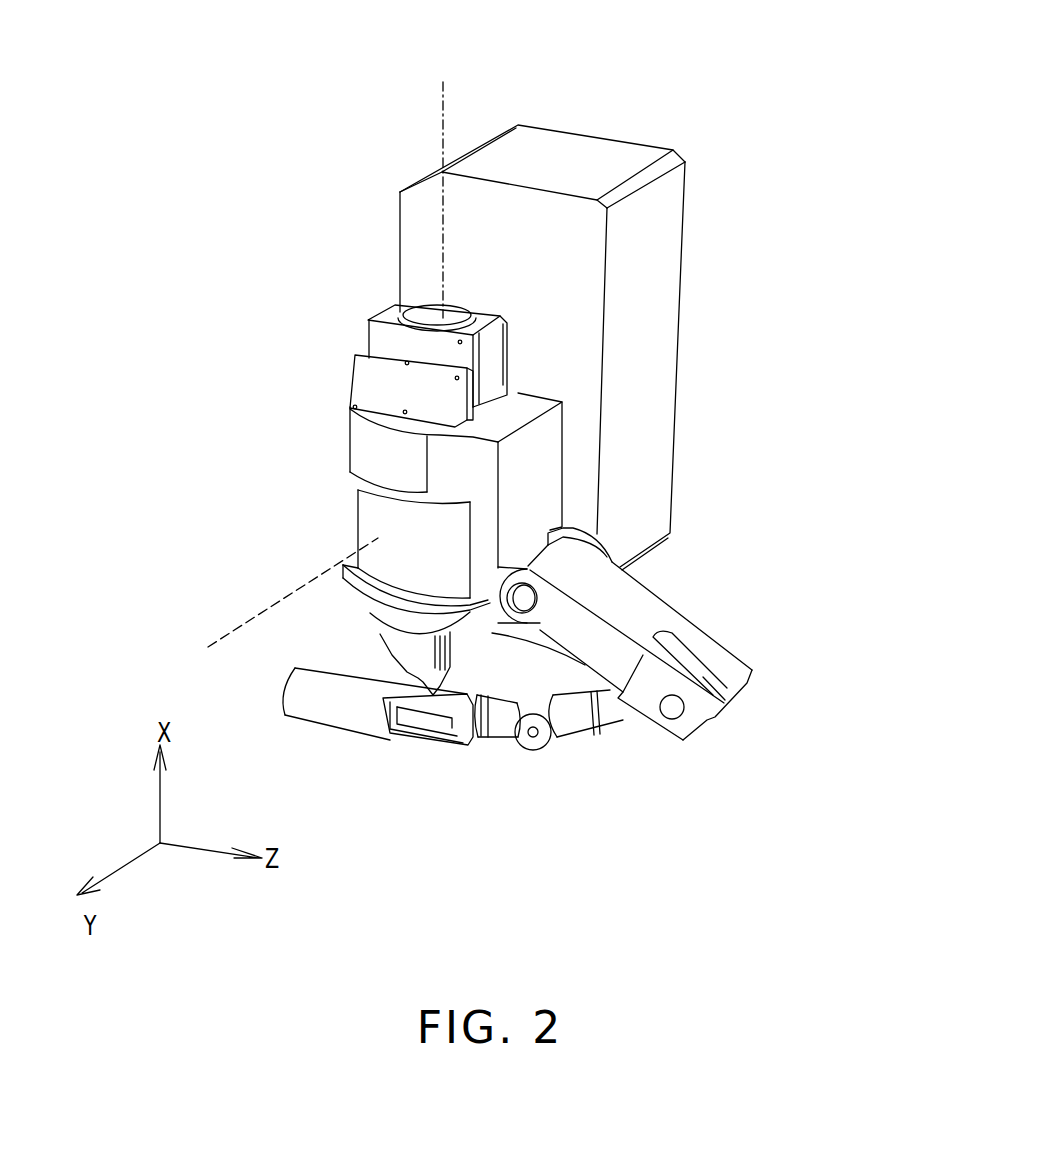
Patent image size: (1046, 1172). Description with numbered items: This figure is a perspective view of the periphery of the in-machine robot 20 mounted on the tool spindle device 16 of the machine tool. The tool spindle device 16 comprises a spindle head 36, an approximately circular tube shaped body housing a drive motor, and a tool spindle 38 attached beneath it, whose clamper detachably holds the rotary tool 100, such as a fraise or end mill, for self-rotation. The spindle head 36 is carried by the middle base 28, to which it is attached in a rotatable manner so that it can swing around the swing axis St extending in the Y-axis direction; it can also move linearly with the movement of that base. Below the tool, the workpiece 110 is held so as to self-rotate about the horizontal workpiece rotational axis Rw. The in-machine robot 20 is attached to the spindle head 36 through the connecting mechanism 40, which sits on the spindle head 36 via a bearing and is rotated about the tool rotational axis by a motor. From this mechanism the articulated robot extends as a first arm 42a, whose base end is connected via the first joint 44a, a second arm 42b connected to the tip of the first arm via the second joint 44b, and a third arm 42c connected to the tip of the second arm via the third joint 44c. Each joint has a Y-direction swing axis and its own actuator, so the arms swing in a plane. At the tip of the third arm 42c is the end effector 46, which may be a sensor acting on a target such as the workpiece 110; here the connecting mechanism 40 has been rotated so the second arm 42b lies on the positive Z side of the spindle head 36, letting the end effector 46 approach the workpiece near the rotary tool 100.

The tool spindle device 16 is at (316, 350).
The in-machine robot 20 is at (800, 652).
The middle base 28 is at (585, 150).
The spindle head 36 is at (367, 508).
The tool spindle 38 is at (380, 612).
The connecting mechanism 40 is at (357, 452).
The first arm 42a is at (632, 598).
The second arm 42b is at (625, 722).
The third arm 42c is at (500, 737).
The first joint 44a is at (519, 610).
The second joint 44b is at (680, 708).
The third joint 44c is at (535, 752).
The end effector 46 is at (445, 715).
The rotary tool 100 is at (428, 688).
The workpiece 110 is at (305, 720).
The workpiece rotational axis Rw is at (445, 181).
The swing axis St is at (278, 602).